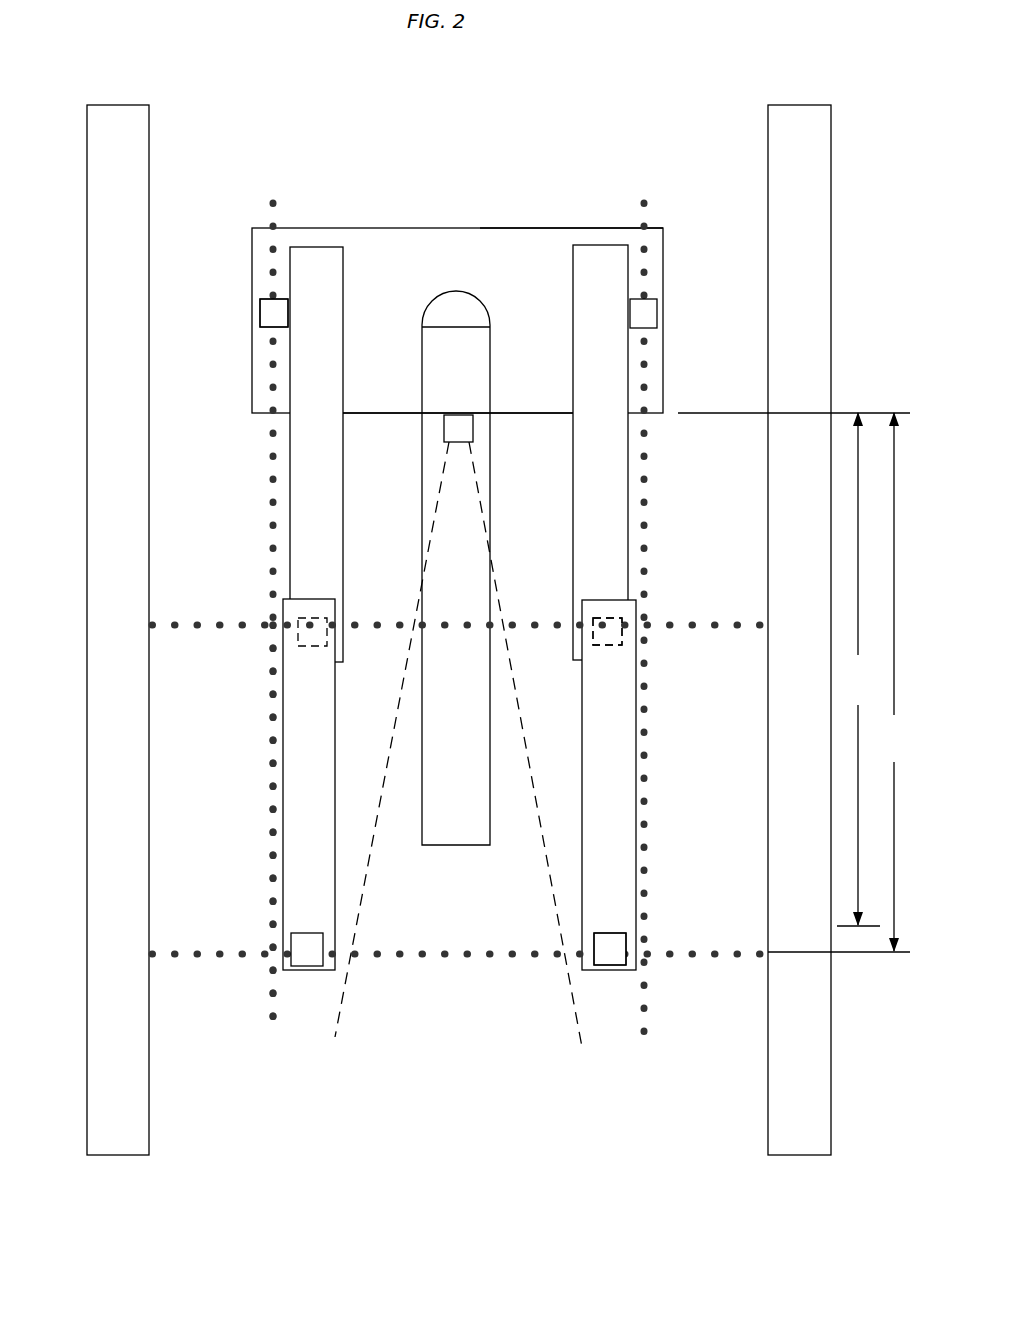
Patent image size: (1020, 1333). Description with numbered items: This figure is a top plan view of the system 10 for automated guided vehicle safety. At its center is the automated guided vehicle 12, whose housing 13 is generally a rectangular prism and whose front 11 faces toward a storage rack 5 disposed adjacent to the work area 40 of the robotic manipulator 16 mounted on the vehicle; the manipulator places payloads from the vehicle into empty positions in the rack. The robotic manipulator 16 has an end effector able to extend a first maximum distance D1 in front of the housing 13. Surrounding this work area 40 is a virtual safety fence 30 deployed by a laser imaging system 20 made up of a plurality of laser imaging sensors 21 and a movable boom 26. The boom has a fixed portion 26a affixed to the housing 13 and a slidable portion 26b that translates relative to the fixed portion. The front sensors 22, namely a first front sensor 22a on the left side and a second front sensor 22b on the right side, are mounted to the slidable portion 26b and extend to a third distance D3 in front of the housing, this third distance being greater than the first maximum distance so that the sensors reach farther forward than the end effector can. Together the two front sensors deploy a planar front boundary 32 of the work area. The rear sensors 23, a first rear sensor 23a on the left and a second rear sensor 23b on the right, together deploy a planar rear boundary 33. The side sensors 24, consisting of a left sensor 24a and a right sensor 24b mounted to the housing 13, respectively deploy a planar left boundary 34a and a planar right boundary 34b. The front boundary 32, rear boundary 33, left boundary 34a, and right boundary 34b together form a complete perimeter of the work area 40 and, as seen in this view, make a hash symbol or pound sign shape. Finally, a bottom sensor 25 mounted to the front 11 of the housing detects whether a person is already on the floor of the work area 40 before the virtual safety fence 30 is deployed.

The storage rack 5 is at (118, 1148).
The system 10 is at (205, 146).
The front 11 is at (363, 413).
The automated guided vehicle 12 is at (458, 228).
The housing 13 is at (540, 228).
The robotic manipulator 16 is at (453, 846).
The laser imaging system 20 is at (304, 970).
The laser imaging sensors 21 is at (612, 968).
The front sensors 22 is at (626, 945).
The first front sensor 22a is at (308, 967).
The second front sensor 22b is at (600, 968).
The rear sensors 23 is at (608, 647).
The first rear sensor 23a is at (312, 616).
The second rear sensor 23b is at (603, 616).
The side sensors 24 is at (288, 318).
The left sensor 24a is at (262, 318).
The right sensor 24b is at (657, 318).
The bottom sensor 25 is at (458, 415).
The movable boom 26 is at (333, 247).
The fixed portion 26a is at (273, 487).
The slidable portion 26b is at (280, 768).
The virtual safety fence 30 is at (447, 618).
The planar front boundary 32 is at (425, 958).
The planar rear boundary 33 is at (393, 612).
The planar left boundary 34a is at (268, 818).
The planar right boundary 34b is at (648, 775).
The work area 40 is at (350, 749).
The first maximum distance D1 is at (794, 669).
The third distance D3 is at (839, 682).